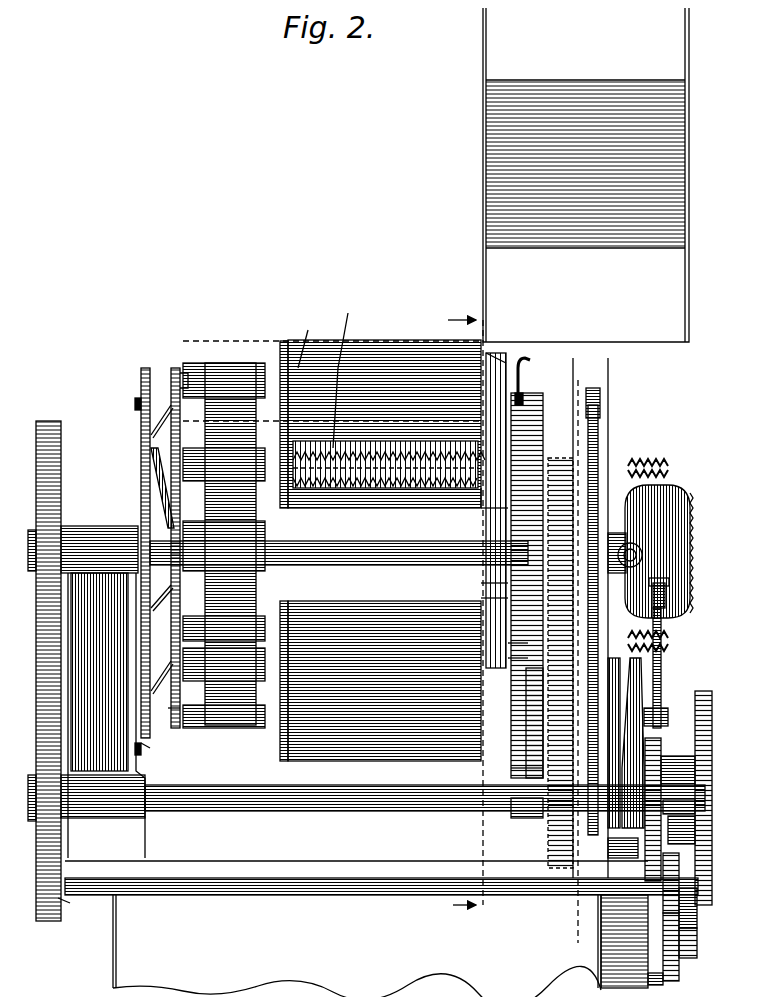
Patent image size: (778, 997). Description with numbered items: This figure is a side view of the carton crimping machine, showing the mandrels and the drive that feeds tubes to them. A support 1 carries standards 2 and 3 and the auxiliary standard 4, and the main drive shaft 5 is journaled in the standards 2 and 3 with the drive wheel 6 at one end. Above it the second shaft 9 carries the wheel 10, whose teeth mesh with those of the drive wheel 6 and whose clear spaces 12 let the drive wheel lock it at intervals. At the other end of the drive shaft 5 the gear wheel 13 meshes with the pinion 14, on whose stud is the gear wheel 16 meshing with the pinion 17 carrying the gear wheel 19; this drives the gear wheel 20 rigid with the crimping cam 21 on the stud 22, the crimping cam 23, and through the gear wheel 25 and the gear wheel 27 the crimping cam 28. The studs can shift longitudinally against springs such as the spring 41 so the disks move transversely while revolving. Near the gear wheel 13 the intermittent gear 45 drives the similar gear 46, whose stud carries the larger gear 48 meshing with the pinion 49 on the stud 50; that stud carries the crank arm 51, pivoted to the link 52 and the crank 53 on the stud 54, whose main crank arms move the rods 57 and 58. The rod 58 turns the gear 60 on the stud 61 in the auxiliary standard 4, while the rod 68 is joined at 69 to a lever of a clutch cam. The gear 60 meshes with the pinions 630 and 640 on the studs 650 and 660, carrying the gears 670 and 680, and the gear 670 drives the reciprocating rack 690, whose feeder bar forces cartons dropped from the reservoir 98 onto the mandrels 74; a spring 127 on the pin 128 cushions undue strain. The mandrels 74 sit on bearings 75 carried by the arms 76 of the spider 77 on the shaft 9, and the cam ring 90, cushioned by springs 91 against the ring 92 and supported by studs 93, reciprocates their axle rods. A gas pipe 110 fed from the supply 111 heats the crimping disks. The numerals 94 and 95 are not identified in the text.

The support 1 is at (118, 923).
The standard 2 is at (110, 700).
The standard 3 is at (548, 690).
The auxiliary standard 4 is at (469, 613).
The main drive shaft 5 is at (325, 803).
The drive wheel 6 is at (321, 661).
The second shaft 9 is at (350, 557).
The wheel 10 is at (53, 488).
The clear spaces 12 is at (662, 624).
The gear wheel 13 is at (655, 450).
The pinion 14 is at (704, 765).
The gear wheel 16 is at (630, 895).
The pinion 17 is at (390, 598).
The gear wheel 19 is at (518, 715).
The gear wheel 20 is at (510, 805).
The crimping cam 21 is at (500, 758).
The stud 22 is at (500, 655).
The crimping cam 23 is at (500, 636).
The gear wheel 25 is at (500, 572).
The gear wheel 27 is at (530, 400).
The crimping cam 28 is at (500, 480).
The spring 41 is at (640, 700).
The intermittent gear 45 is at (660, 740).
The intermittent gear 46 is at (640, 900).
The gear 48 is at (690, 880).
The pinion 49 is at (686, 958).
The stud 50 is at (645, 975).
The crank arm 51 is at (690, 936).
The link 52 is at (692, 900).
The crank 53 is at (690, 822).
The stud 54 is at (700, 800).
The rod 57 is at (600, 730).
The rod 58 is at (655, 660).
The gear 60 is at (665, 522).
The stud 61 is at (640, 530).
The rod 68 is at (613, 546).
The joint 69 is at (592, 400).
The mandrel 74 is at (355, 350).
The bearing 75 is at (218, 355).
The arm 76 is at (275, 500).
The spider 77 is at (135, 470).
The cam ring 90 is at (140, 365).
The springs 91 is at (133, 410).
The disk or ring 92 is at (140, 720).
The studs 93 is at (172, 710).
The flange 94 is at (275, 335).
The frame bar 95 is at (170, 360).
The reservoir 98 is at (676, 270).
The gas pipe 110 is at (500, 345).
The supply 111 is at (522, 372).
The spring 127 is at (346, 372).
The pin 128 is at (312, 340).
The pinion 630 is at (555, 450).
The pinion 640 is at (660, 590).
The stud 650 is at (500, 512).
The stud 660 is at (500, 565).
The gear 670 is at (595, 440).
The gear 680 is at (634, 553).
The reciprocating rack 690 is at (352, 485).